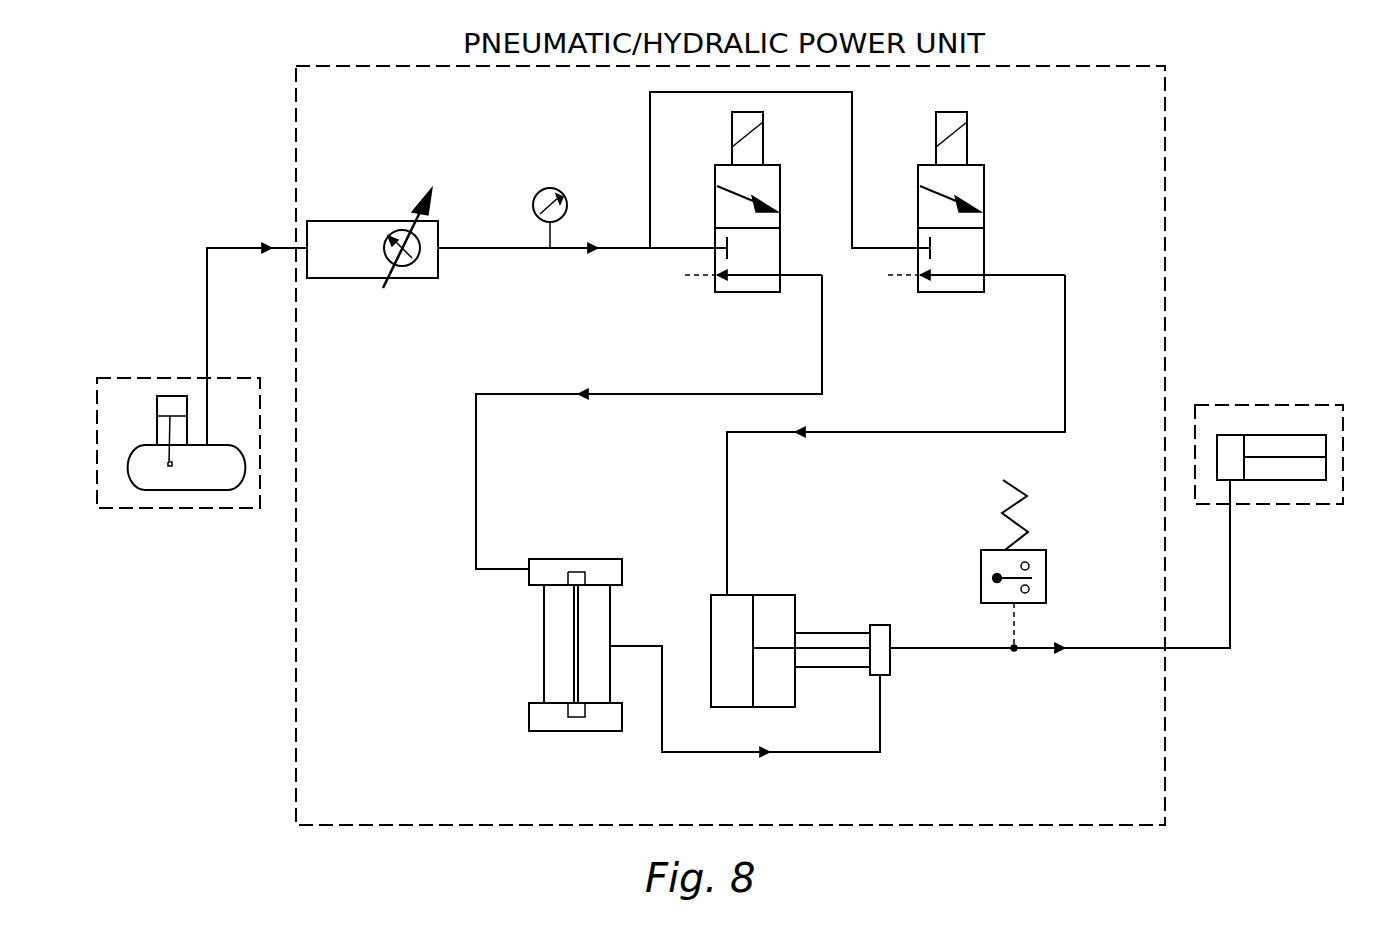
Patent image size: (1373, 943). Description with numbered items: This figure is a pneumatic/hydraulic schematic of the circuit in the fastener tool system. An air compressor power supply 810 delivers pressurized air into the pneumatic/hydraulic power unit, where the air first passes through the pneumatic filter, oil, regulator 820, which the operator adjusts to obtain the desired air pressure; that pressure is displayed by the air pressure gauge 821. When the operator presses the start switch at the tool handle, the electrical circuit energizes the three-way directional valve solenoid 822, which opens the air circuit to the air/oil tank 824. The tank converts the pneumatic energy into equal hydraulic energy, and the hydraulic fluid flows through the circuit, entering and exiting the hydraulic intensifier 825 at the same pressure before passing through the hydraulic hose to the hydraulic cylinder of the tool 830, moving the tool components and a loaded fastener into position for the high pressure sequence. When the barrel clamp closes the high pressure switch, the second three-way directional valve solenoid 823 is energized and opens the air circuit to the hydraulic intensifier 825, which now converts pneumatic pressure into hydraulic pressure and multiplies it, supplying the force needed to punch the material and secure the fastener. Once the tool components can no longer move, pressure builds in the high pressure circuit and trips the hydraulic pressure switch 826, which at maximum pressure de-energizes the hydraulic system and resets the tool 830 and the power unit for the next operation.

The air compressor power supply 810 is at (157, 430).
The pneumatic filter, oil, regulator 820 is at (362, 221).
The air pressure gauge 821 is at (569, 205).
The 3-way directional valve solenoid 822 is at (713, 290).
The 3-way directional valve solenoid 823 is at (984, 243).
The air/oil tank 824 is at (541, 645).
The hydraulic intensifier 825 is at (775, 595).
The hydraulic pressure switch 826 is at (981, 562).
The tool 830 is at (1287, 483).